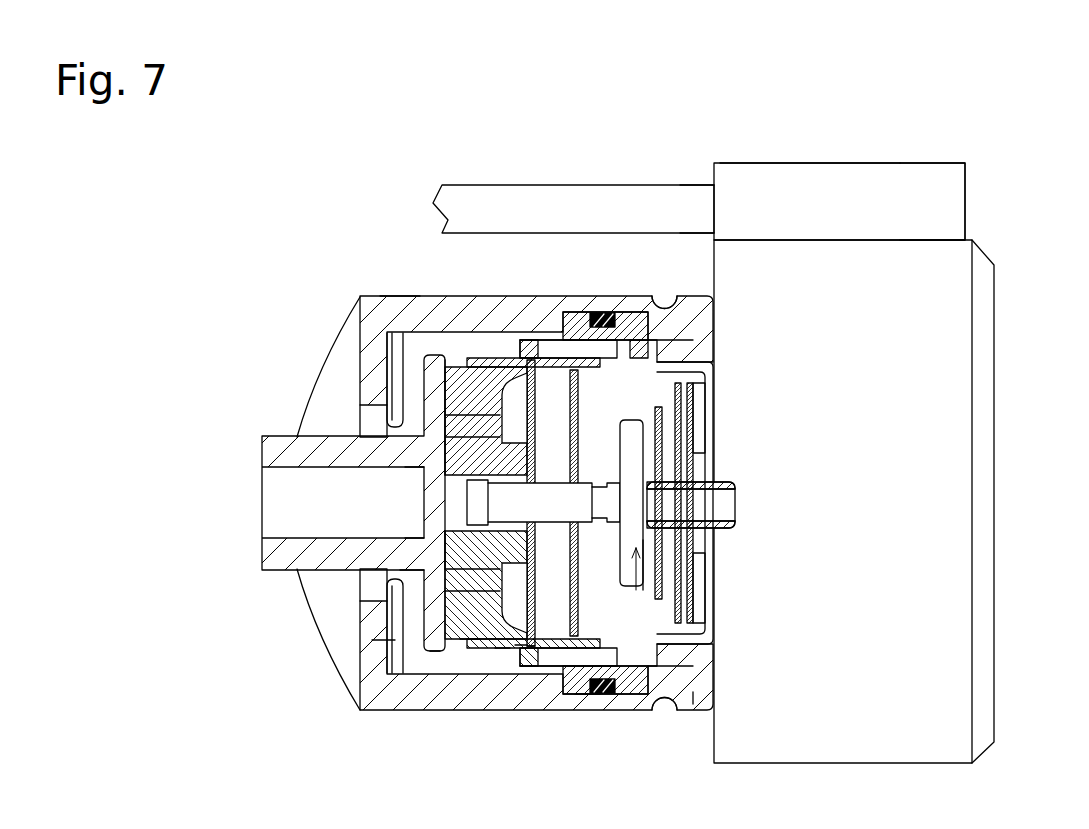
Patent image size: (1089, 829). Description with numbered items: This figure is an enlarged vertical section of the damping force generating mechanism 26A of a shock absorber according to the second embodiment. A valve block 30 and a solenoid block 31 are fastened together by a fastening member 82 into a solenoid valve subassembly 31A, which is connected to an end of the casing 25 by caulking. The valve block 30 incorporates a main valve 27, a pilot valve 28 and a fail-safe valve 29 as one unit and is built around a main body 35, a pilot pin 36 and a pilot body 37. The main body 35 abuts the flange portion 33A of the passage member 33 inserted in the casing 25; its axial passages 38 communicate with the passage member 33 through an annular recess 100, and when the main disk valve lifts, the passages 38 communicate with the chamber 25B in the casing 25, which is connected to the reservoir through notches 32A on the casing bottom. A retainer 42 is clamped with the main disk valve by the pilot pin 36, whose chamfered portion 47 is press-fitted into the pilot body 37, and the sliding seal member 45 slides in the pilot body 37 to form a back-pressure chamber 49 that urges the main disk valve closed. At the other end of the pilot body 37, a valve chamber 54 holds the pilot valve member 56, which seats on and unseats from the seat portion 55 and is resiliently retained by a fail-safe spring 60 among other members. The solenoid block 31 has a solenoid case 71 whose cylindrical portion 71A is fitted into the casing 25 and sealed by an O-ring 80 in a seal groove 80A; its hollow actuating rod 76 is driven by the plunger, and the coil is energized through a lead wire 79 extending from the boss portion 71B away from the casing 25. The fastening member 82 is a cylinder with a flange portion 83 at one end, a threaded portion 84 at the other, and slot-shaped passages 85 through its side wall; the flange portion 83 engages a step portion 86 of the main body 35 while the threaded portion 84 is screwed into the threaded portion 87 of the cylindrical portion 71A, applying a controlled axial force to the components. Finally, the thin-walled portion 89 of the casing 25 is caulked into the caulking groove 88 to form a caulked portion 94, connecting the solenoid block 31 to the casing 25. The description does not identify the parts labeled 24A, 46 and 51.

The flange portion 24A is at (358, 372).
The casing 25 is at (372, 300).
The chamber 25B is at (447, 320).
The damping force generating mechanism 26A is at (576, 163).
The main valve 27 is at (528, 362).
The pilot valve 28 is at (650, 598).
The fail-safe valve 29 is at (720, 437).
The valve block 30 is at (527, 705).
The solenoid block 31 is at (862, 163).
The solenoid valve subassembly 31A is at (488, 300).
The notches 32A is at (398, 300).
The passage member 33 is at (290, 503).
The flange portion 33A is at (420, 572).
The main body 35 is at (457, 705).
The pilot pin 36 is at (440, 470).
The pilot body 37 is at (640, 555).
The passages 38 is at (365, 712).
The retainer 42 is at (498, 705).
The sliding seal member 45 is at (512, 705).
The lower passage 46 is at (440, 538).
The chamfered portion 47 is at (540, 395).
The back-pressure chamber 49 is at (532, 340).
The seal holder 51 is at (577, 312).
The valve chamber 54 is at (576, 372).
The seat portion 55 is at (588, 310).
The pilot valve member 56 is at (693, 692).
The fail-safe spring 60 is at (628, 312).
The solenoid case 71 is at (708, 700).
The circular cylindrical portion 71A is at (577, 707).
The boss portion 71B is at (916, 185).
The actuating rod 76 is at (732, 484).
The lead wire 79 is at (688, 203).
The O-ring 80 is at (599, 697).
The seal groove 80A is at (582, 700).
The fastening member 82 is at (478, 340).
The flange portion 83 is at (447, 365).
The threaded portion 84 is at (688, 310).
The passages 85 is at (556, 345).
The step portion 86 is at (428, 705).
The threaded portion 87 is at (688, 345).
The caulking groove 88 is at (665, 706).
The thin-walled portion 89 is at (666, 300).
The caulked portion 94 is at (672, 305).
The annular recess 100 is at (470, 565).